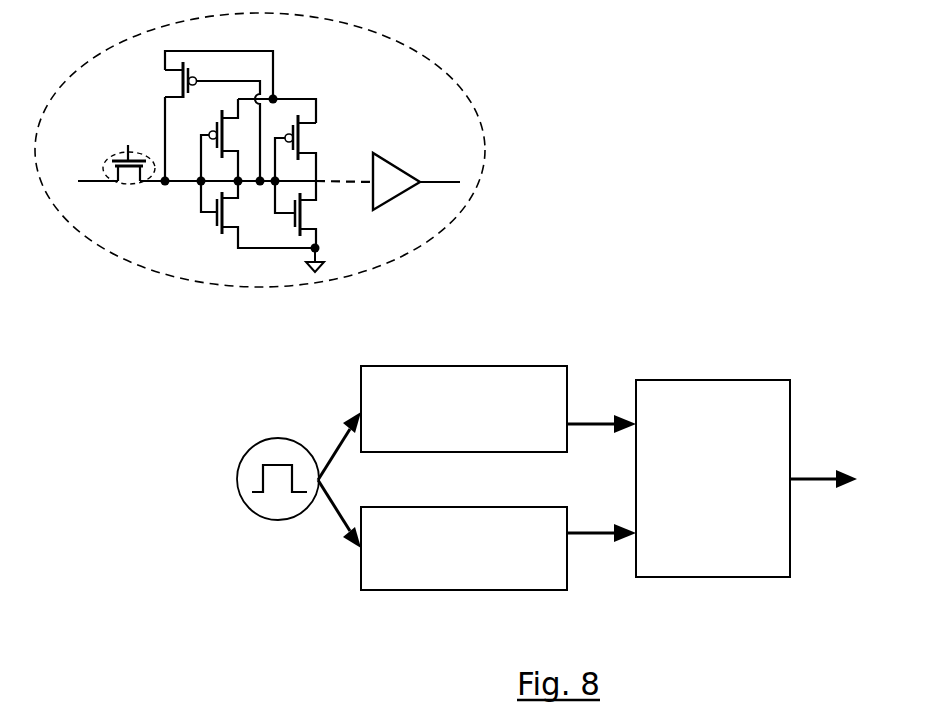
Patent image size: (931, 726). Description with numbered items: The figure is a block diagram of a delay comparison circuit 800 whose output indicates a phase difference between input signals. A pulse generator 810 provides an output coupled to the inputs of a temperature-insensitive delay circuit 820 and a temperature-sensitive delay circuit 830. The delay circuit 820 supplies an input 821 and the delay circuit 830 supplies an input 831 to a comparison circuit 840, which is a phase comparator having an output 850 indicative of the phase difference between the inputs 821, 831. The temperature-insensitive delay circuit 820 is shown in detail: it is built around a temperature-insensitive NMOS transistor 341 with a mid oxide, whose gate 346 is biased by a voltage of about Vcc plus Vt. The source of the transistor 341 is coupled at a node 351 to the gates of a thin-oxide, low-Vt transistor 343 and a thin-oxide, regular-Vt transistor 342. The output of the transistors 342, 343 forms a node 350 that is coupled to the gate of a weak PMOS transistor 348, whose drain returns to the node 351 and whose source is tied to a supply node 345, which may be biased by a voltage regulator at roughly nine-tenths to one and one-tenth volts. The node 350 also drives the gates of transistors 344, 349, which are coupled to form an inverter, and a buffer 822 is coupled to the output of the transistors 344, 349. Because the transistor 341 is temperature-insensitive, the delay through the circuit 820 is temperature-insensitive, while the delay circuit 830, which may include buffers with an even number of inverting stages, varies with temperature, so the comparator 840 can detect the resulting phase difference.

The transistor 341 is at (106, 163).
The transistor 342 is at (213, 131).
The transistor 343 is at (213, 223).
The transistor 344 is at (307, 218).
The supply node 345 is at (277, 64).
The gate 346 is at (128, 145).
The transistor 348 is at (173, 81).
The transistor 349 is at (306, 138).
The node 350 is at (206, 85).
The node 351 is at (196, 184).
The delay comparison circuit 800 is at (705, 142).
The pulse generator 810 is at (270, 437).
The temperature-insensitive delay circuit 820 is at (362, 285).
The input 821 is at (596, 419).
The buffer 822 is at (407, 144).
The temperature-sensitive delay circuit 830 is at (447, 590).
The input 831 is at (598, 531).
The phase comparator 840 is at (648, 378).
The output 850 is at (800, 473).